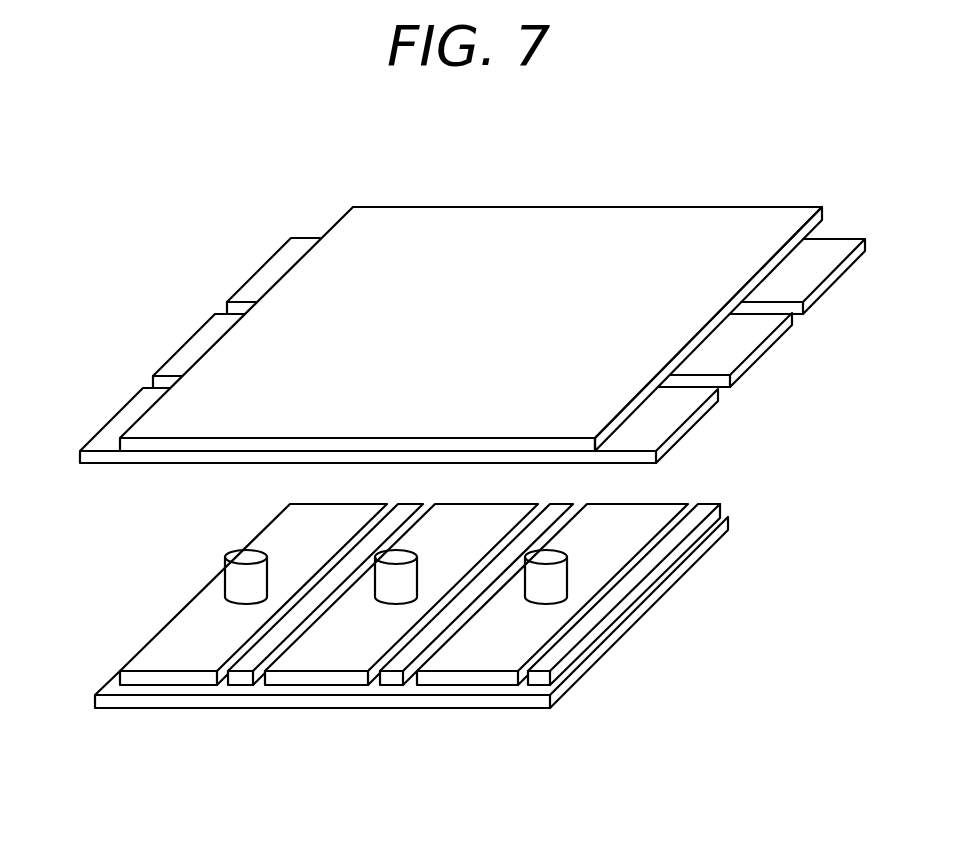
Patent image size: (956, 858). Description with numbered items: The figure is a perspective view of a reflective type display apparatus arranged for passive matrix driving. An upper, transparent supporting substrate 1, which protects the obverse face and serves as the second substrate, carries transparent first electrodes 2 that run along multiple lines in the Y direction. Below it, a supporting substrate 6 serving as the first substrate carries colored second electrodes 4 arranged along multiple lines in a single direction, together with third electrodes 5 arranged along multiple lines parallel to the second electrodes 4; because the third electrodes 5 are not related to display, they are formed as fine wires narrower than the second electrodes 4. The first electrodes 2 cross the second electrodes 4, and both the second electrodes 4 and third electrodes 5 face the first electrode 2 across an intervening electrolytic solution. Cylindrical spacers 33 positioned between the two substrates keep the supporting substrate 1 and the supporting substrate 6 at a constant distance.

The transparent supporting substrate 1 is at (464, 230).
The first electrode 2 is at (273, 268).
The second electrode 4 is at (162, 639).
The third electrode 5 is at (247, 663).
The supporting substrate 6 is at (127, 702).
The spacer 33 is at (233, 573).